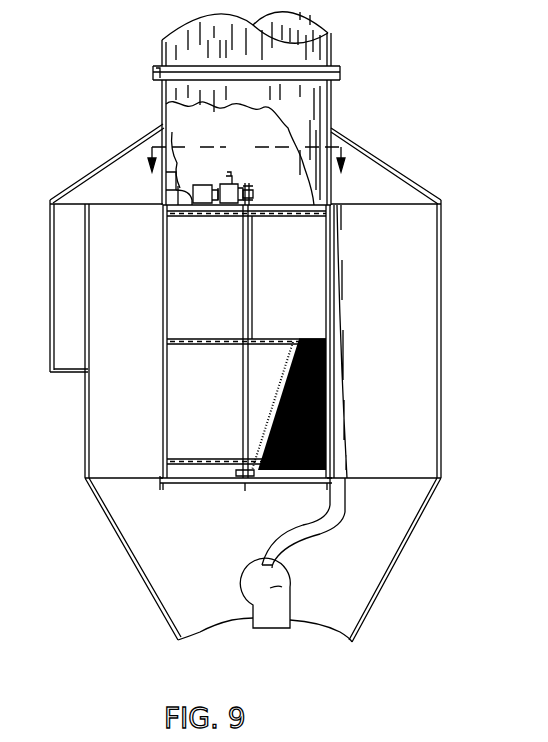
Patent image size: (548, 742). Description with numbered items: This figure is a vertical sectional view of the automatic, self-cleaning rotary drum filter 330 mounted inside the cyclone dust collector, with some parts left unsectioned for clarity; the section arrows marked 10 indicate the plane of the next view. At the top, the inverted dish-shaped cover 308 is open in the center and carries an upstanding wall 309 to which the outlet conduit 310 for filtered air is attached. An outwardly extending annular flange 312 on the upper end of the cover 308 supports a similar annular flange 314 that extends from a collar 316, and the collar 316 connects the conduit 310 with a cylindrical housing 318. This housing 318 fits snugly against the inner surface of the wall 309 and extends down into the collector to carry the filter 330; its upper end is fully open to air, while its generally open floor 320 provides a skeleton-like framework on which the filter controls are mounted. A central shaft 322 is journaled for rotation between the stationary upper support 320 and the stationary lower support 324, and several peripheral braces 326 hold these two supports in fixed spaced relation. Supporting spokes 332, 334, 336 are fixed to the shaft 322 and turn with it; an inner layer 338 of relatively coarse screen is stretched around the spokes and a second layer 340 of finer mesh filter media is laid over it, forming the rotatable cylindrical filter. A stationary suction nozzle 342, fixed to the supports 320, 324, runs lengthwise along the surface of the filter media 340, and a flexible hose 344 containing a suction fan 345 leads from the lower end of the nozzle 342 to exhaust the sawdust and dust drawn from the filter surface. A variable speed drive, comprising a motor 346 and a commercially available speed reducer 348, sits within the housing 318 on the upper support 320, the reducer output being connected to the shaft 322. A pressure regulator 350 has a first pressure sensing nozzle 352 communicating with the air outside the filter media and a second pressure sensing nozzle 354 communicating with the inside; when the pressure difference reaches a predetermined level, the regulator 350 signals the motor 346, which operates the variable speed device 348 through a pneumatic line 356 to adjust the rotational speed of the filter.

The section line 10 is at (250, 170).
The cover 308 is at (108, 168).
The upstanding wall 309 is at (333, 116).
The conduit 310 is at (232, 40).
The annular flange 312 is at (160, 80).
The annular flange 314 is at (160, 72).
The collar 316 is at (160, 66).
The cylindrical housing 318 is at (310, 112).
The floor or upper support 320 is at (272, 212).
The shaft 322 is at (249, 270).
The lower support 324 is at (226, 482).
The peripheral braces 326 is at (163, 370).
The rotary drum filter 330 is at (160, 302).
The supporting spoke 332 is at (280, 218).
The supporting spoke 334 is at (183, 341).
The supporting spoke 336 is at (181, 462).
The inner layer of coarse screen 338 is at (326, 402).
The finer mesh filter media 340 is at (326, 346).
The suction nozzle 342 is at (339, 312).
The flexible hose 344 is at (328, 500).
The suction fan 345 is at (292, 588).
The motor 346 is at (203, 203).
The speed reducer 348 is at (247, 186).
The pressure regulator 350 is at (192, 175).
The first pressure sensing nozzle 352 is at (170, 140).
The second pressure sensing nozzle 354 is at (180, 195).
The pneumatic line 356 is at (196, 198).